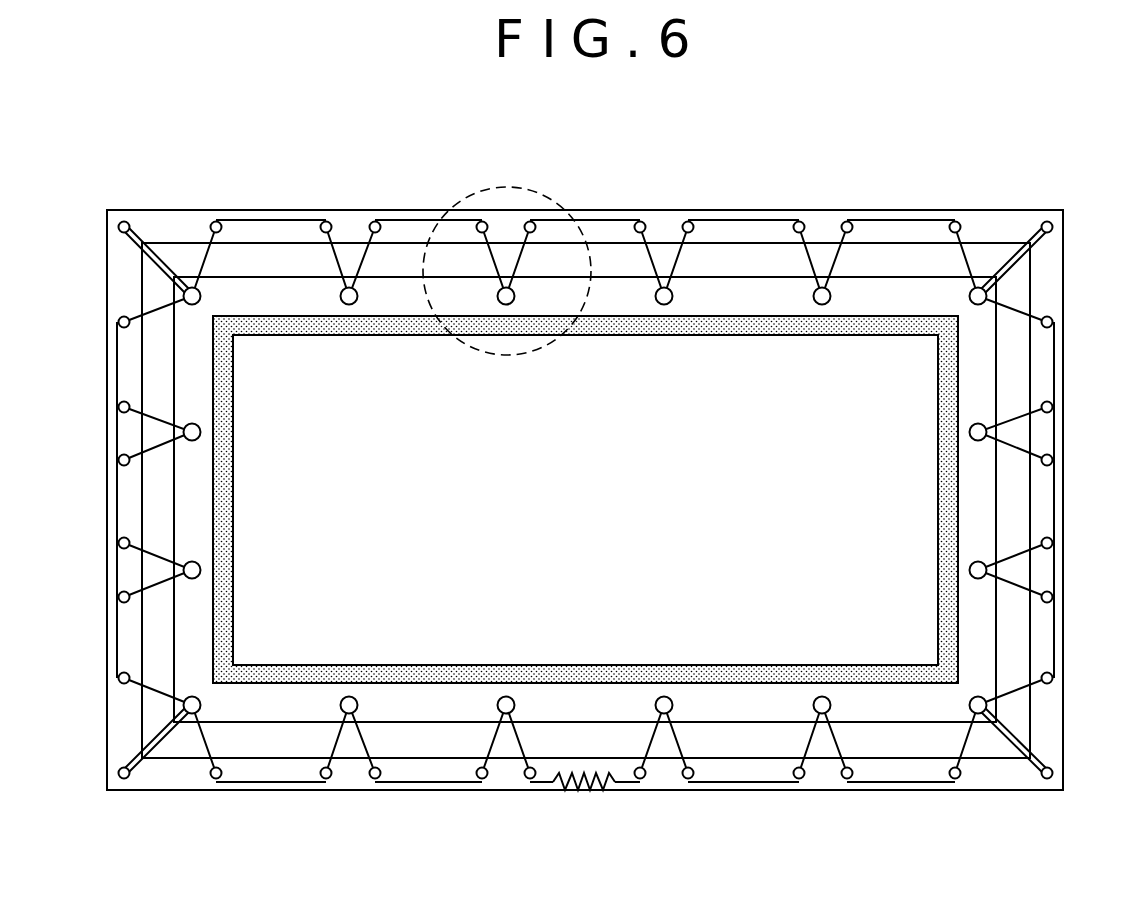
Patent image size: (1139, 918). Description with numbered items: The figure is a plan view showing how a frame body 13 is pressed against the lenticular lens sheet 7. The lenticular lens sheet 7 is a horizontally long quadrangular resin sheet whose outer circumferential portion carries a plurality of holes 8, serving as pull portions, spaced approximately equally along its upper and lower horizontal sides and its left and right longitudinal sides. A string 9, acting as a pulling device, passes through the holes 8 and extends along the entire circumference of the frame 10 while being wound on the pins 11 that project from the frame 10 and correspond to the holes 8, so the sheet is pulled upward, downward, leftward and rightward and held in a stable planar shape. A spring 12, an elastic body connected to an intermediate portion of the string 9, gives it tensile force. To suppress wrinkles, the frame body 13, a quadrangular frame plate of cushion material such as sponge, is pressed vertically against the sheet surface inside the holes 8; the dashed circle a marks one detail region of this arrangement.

The lenticular lens sheet 7 is at (745, 292).
The holes 8 is at (585, 501).
The string 9 is at (741, 784).
The frame 10 is at (580, 210).
The pins 11 is at (585, 501).
The spring 12 is at (581, 791).
The frame body 13 is at (430, 681).
The enlarged region a is at (507, 187).